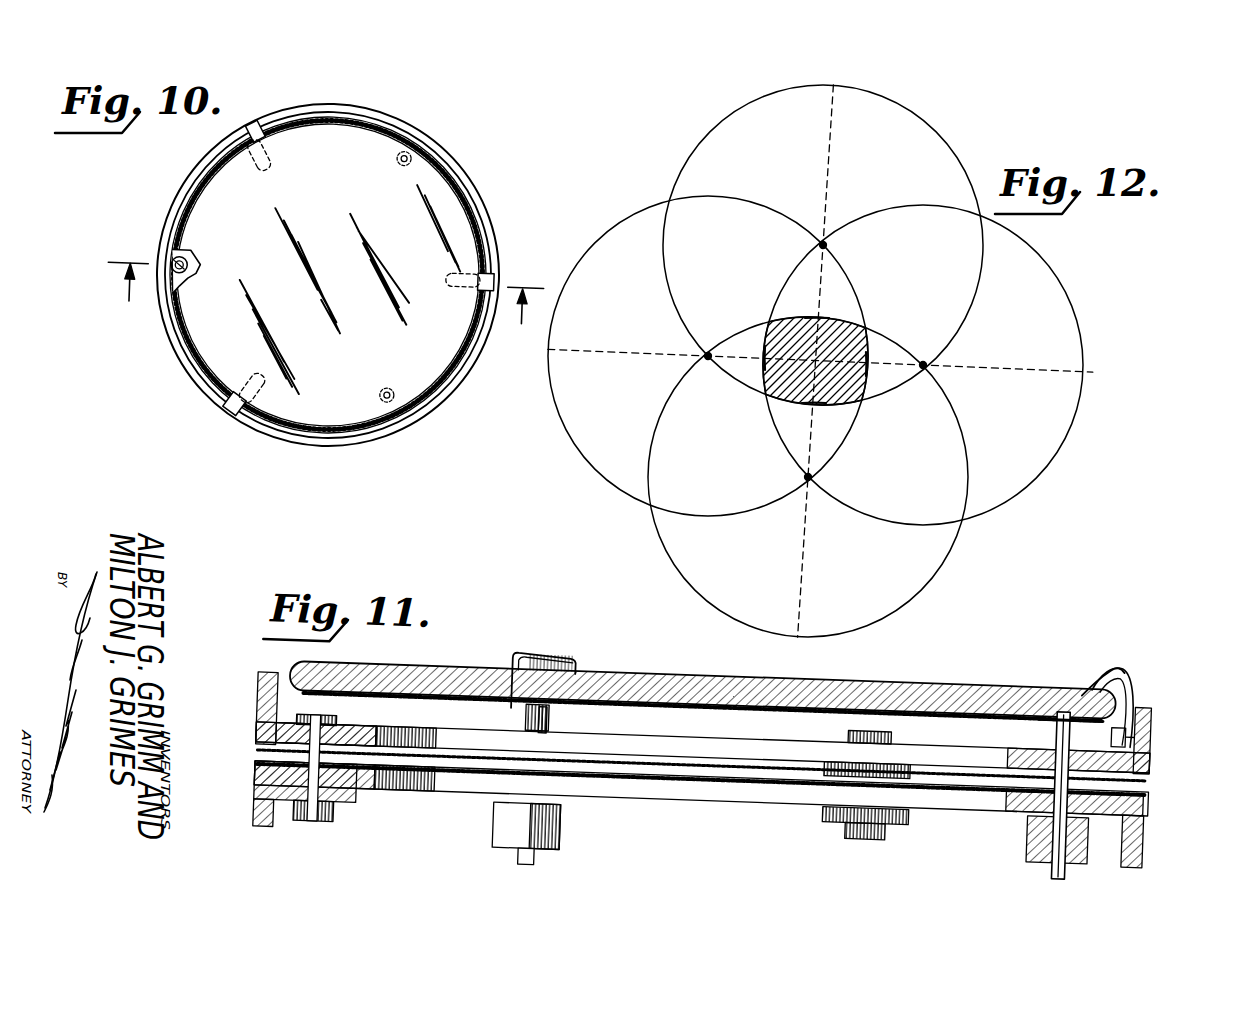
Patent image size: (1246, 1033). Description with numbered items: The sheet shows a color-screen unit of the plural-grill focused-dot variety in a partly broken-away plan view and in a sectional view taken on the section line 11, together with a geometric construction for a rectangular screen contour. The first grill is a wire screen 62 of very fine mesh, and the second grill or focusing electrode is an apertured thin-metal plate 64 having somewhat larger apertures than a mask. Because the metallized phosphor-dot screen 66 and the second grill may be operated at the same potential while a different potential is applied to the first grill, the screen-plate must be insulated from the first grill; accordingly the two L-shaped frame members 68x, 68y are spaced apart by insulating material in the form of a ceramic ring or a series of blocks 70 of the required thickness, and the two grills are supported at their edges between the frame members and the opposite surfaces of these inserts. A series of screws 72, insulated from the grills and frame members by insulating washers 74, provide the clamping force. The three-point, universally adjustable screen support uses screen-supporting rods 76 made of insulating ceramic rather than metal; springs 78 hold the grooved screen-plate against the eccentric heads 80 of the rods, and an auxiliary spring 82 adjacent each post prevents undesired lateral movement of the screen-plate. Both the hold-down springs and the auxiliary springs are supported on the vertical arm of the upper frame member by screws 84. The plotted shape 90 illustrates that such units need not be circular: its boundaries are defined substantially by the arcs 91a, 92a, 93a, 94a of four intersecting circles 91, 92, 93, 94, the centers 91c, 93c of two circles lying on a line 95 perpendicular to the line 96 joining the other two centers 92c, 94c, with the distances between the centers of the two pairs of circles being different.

In FIG. 10, the section line 11 is at (324, 311).
In FIG. 11, the wire screen 62 is at (598, 782).
In FIG. 11, the apertured thin-metal plate 64 is at (650, 735).
In FIG. 10, the metallized phosphor-dot screen 66 is at (326, 220).
In FIG. 11, the metallized phosphor-dot screen 66 is at (664, 662).
In FIG. 11, the upper L-shaped frame member 68x is at (1154, 690).
In FIG. 11, the lower L-shaped frame member 68y is at (1150, 790).
In FIG. 11, the insulating blocks 70 is at (354, 732).
In FIG. 10, the screws 72 is at (428, 140).
In FIG. 11, the screws 72 is at (316, 714).
In FIG. 11, the insulating washers 74 is at (328, 714).
In FIG. 11, the screen-supporting rods 76 is at (552, 708).
In FIG. 10, the springs 78 is at (256, 125).
In FIG. 11, the springs 78 is at (560, 646).
In FIG. 10, the eccentric heads 80 is at (232, 138).
In FIG. 11, the eccentric heads 80 is at (1048, 730).
In FIG. 11, the auxiliary spring 82 is at (1124, 648).
In FIG. 11, the screws 84 is at (526, 712).
In FIG. 12, the shape 90 is at (864, 334).
In FIG. 12, the circle 91 is at (957, 541).
In FIG. 12, the circle 92 is at (606, 474).
In FIG. 12, the circle 93 is at (904, 108).
In FIG. 12, the circle 94 is at (1070, 306).
In FIG. 12, the arc 91a is at (838, 322).
In FIG. 12, the arc 92a is at (864, 364).
In FIG. 12, the arc 93a is at (842, 406).
In FIG. 12, the arc 94a is at (768, 380).
In FIG. 12, the center 91c is at (806, 477).
In FIG. 12, the center 92c is at (720, 338).
In FIG. 12, the center 93c is at (824, 243).
In FIG. 12, the center 94c is at (926, 364).
In FIG. 12, the line 95 is at (826, 117).
In FIG. 12, the line 96 is at (580, 352).